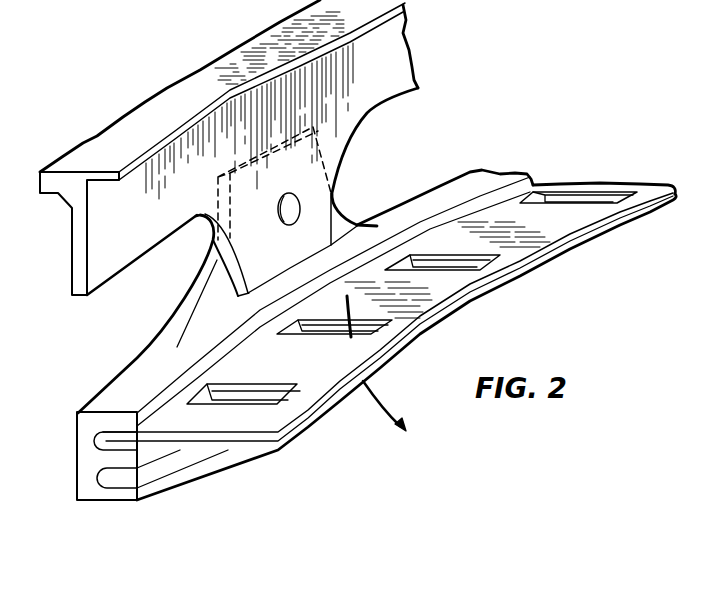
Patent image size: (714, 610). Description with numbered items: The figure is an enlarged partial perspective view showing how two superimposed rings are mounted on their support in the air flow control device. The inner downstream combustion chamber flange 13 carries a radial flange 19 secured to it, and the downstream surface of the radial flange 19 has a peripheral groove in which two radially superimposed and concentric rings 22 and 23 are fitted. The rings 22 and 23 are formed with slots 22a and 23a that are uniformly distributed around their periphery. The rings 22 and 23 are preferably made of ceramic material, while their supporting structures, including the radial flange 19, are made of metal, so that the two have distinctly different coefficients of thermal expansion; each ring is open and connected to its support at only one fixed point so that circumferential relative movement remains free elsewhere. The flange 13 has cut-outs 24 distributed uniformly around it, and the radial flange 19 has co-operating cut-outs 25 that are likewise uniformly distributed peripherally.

The flange 13 is at (365, 83).
The radial flange 19 is at (401, 208).
The ring 22 is at (598, 230).
The slots 22a is at (253, 401).
The ring 23 is at (519, 264).
The slots 23a is at (289, 391).
The cut-outs 24 is at (118, 274).
The cut-outs 25 is at (210, 279).